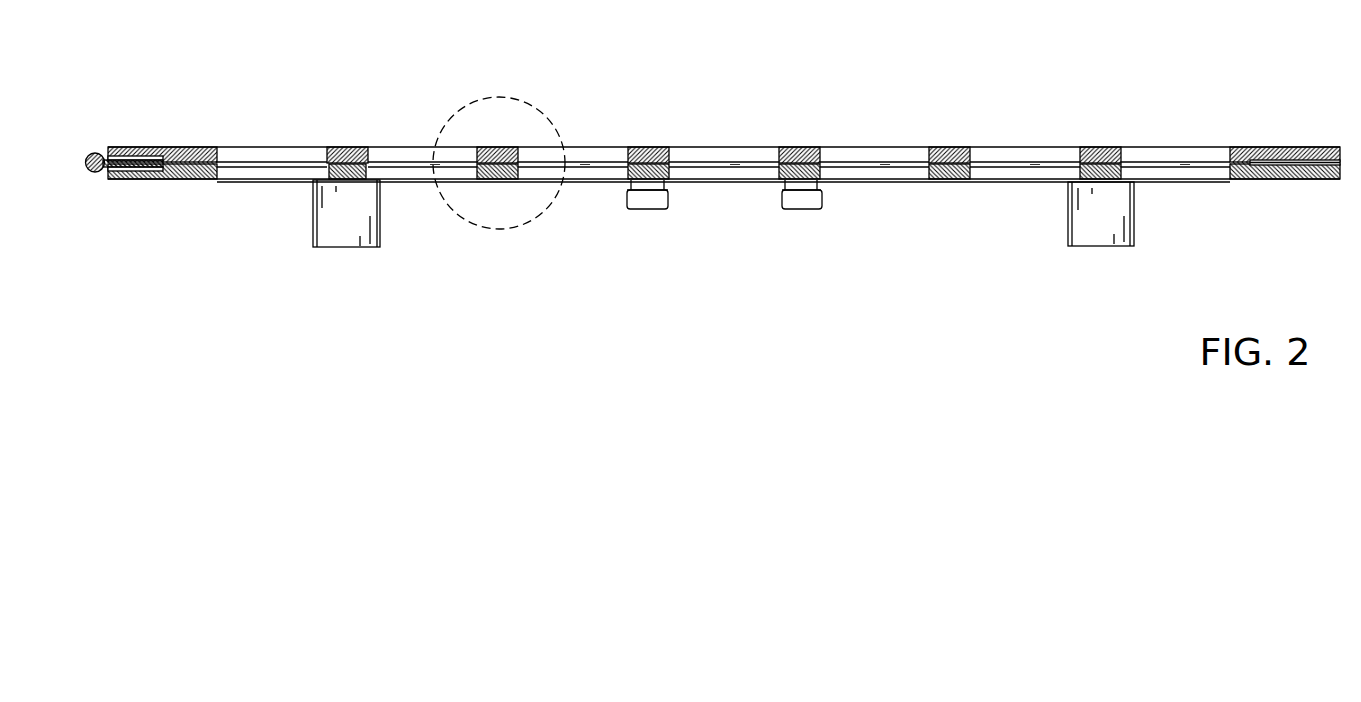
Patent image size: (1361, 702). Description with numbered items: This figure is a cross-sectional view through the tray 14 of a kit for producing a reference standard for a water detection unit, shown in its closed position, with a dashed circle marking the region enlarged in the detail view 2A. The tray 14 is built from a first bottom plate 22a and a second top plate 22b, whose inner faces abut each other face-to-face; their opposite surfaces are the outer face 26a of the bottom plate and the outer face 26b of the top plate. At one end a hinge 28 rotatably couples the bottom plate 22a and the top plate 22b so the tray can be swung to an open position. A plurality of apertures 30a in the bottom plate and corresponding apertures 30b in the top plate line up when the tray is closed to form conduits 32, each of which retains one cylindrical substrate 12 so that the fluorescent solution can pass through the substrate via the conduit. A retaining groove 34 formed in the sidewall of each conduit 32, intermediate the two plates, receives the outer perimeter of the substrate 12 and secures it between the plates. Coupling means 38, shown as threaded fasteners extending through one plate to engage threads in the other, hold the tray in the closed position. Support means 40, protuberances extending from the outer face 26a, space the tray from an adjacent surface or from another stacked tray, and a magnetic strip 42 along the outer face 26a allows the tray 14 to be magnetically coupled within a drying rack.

The substrate 12 is at (574, 158).
The tray 14 is at (1263, 136).
The bottom plate 22a is at (185, 188).
The top plate 22b is at (195, 138).
The outer face of bottom plate 26a is at (1286, 181).
The outer face of top plate 26b is at (648, 146).
The hinge 28 is at (92, 173).
The apertures of bottom plate 30a is at (326, 174).
The apertures of top plate 30b is at (328, 146).
The conduit 32 is at (400, 158).
The retaining groove 34 is at (472, 156).
The coupling means 38 is at (647, 210).
The support means 40 is at (347, 248).
The magnetic strip 42 is at (871, 184).
The detail view circle 2A is at (498, 230).